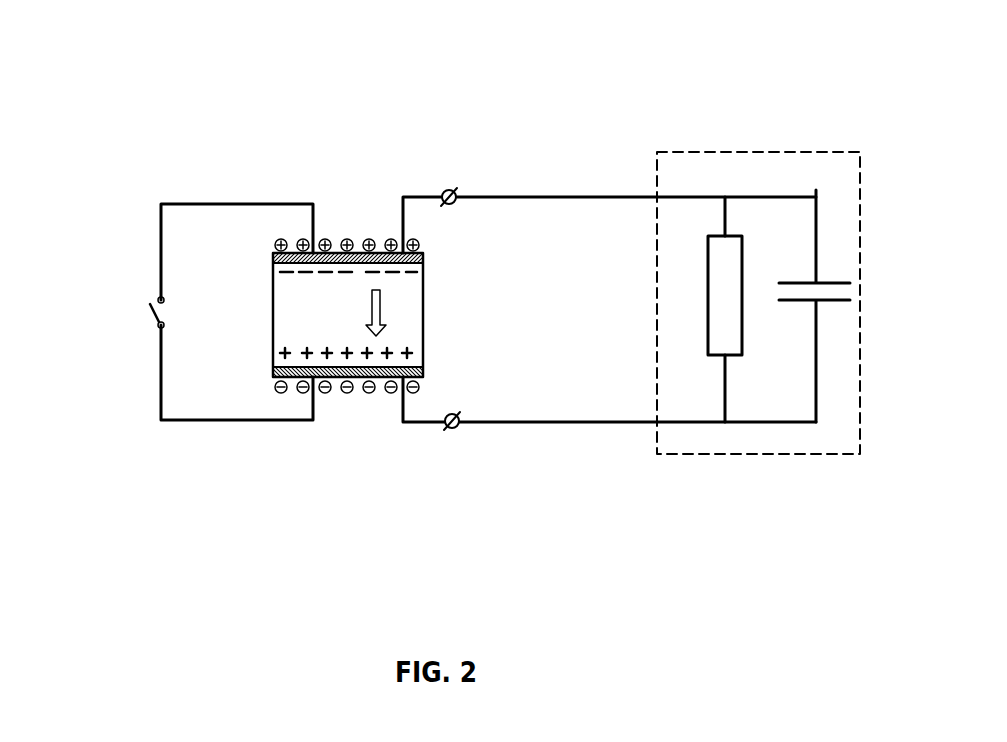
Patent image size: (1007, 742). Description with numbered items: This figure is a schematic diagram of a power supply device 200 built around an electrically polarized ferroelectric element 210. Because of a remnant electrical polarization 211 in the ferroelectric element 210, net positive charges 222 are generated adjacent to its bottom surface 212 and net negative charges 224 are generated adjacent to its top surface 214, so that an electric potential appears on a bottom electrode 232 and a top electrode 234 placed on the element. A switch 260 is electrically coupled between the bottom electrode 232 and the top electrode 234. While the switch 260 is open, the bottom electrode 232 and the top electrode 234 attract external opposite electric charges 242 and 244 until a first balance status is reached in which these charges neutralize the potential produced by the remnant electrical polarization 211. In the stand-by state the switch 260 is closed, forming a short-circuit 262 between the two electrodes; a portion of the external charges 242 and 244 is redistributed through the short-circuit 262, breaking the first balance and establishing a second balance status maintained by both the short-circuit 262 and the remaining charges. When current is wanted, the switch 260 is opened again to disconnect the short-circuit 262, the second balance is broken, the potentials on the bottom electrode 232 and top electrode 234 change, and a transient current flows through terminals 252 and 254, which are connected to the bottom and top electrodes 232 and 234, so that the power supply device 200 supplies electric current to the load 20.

The power supply device 200 is at (238, 106).
The ferroelectric element 210 is at (360, 337).
The remnant electrical polarization 211 is at (370, 302).
The bottom surface 212 is at (297, 366).
The top surface 214 is at (401, 263).
The net positive charges 222 is at (310, 341).
The net negative charges 224 is at (393, 279).
The bottom electrode 232 is at (340, 392).
The top electrode 234 is at (336, 250).
The external electric charges 242 is at (350, 393).
The external electric charges 244 is at (365, 238).
The terminal 252 is at (451, 428).
The terminal 254 is at (450, 190).
The switch 260 is at (155, 322).
The short-circuit 262 is at (157, 407).
The load 20 is at (826, 442).